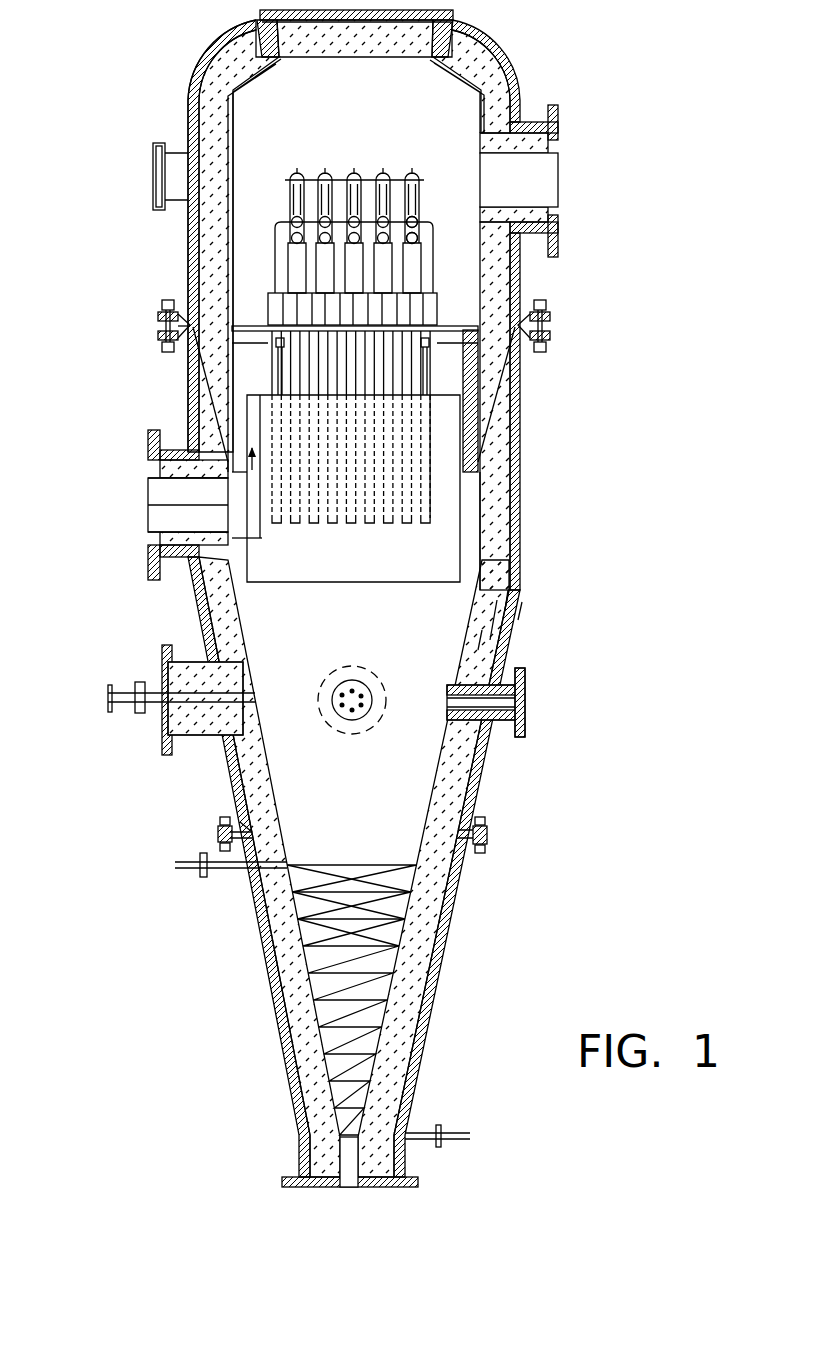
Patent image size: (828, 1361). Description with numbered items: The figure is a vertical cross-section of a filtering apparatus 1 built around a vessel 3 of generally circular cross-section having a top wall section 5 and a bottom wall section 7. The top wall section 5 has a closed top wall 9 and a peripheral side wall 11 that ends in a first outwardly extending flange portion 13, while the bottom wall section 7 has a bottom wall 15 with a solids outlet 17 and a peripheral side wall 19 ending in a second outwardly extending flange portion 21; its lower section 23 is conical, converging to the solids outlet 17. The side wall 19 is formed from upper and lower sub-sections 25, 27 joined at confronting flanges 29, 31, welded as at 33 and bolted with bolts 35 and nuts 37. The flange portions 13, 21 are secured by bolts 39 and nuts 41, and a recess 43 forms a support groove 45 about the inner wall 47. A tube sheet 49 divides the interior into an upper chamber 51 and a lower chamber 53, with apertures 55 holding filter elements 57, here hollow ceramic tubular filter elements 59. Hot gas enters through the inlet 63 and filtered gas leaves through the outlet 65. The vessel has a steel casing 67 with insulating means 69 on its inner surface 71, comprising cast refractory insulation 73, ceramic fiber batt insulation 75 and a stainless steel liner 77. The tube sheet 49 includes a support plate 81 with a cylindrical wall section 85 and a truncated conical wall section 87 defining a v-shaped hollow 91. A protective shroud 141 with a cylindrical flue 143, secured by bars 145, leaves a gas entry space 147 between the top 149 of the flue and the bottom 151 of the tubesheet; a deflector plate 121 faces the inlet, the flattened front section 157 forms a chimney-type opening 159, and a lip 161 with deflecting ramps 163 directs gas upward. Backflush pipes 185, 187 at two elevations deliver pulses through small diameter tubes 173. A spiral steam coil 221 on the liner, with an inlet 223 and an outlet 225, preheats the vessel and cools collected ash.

The filtering apparatus 1 is at (130, 70).
The vessel 3 is at (628, 389).
The top wall section 5 is at (122, 222).
The bottom wall section 7 is at (145, 618).
The top wall 9 is at (505, 42).
The peripheral side wall 11 is at (188, 106).
The first outwardly extending flange portion 13 is at (162, 310).
The bottom wall 15 is at (304, 1150).
The solids outlet 17 is at (350, 1153).
The peripheral side wall 19 is at (262, 922).
The second outwardly extending flange portion 21 is at (158, 338).
The lower section 23 is at (462, 1008).
The upper sub-section 25 is at (483, 788).
The lower sub-section 27 is at (445, 940).
The outwardly extending flange 29 is at (217, 825).
The outwardly extending flange 31 is at (222, 838).
The weld 33 is at (244, 824).
The bolts 35 is at (490, 822).
The nuts 37 is at (482, 848).
The bolts 39 is at (175, 326).
The nuts 41 is at (172, 352).
The recess 43 is at (535, 348).
The support groove 45 is at (190, 305).
The inner wall 47 is at (232, 377).
The tube sheet 49 is at (545, 305).
The upper chamber 51 is at (305, 102).
The lower chamber 53 is at (298, 665).
The apertures 55 is at (440, 320).
The filter elements 57 is at (440, 520).
The hollow ceramic tubular filter elements 59 is at (398, 530).
The inlet 63 is at (106, 500).
The outlet 65 is at (600, 182).
The steel casing 67 is at (514, 652).
The insulating means 69 is at (452, 660).
The inner surface 71 is at (522, 602).
The cast refractory insulation 73 is at (508, 590).
The ceramic fiber batt insulation 75 is at (497, 604).
The liner 77 is at (482, 630).
The support plate 81 is at (297, 176).
The cylindrical wall section 85 is at (486, 400).
The truncated conical wall section 87 is at (482, 445).
The v-shaped hollow 91 is at (492, 415).
The deflector plate 121 is at (262, 522).
The protective shroud 141 is at (463, 497).
The cylindrical flue 143 is at (343, 575).
The bars 145 is at (258, 376).
The gas entry space 147 is at (245, 352).
The top 149 is at (500, 375).
The bottom 151 is at (548, 320).
The front section 157 is at (258, 505).
The chimney-type opening 159 is at (255, 492).
The lip 161 is at (247, 570).
The deflecting ramps 163 is at (268, 538).
The small diameter tubes 173 is at (428, 278).
The backflush pipes 185 is at (420, 238).
The backflush pipes 187 is at (416, 224).
The steam coil 221 is at (330, 942).
The inlet 223 is at (232, 872).
The outlet 225 is at (518, 1136).